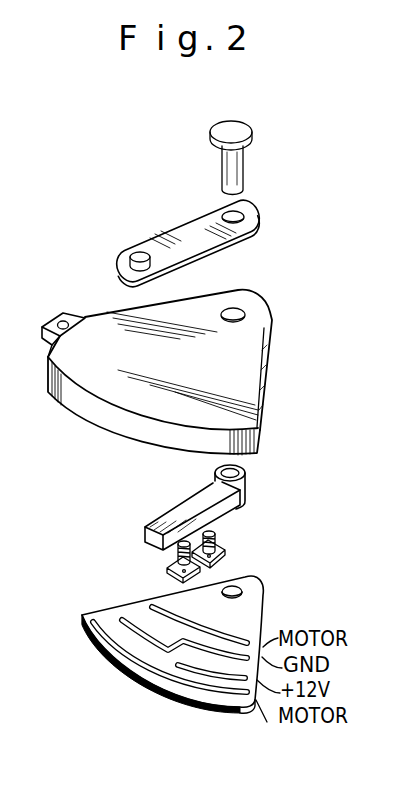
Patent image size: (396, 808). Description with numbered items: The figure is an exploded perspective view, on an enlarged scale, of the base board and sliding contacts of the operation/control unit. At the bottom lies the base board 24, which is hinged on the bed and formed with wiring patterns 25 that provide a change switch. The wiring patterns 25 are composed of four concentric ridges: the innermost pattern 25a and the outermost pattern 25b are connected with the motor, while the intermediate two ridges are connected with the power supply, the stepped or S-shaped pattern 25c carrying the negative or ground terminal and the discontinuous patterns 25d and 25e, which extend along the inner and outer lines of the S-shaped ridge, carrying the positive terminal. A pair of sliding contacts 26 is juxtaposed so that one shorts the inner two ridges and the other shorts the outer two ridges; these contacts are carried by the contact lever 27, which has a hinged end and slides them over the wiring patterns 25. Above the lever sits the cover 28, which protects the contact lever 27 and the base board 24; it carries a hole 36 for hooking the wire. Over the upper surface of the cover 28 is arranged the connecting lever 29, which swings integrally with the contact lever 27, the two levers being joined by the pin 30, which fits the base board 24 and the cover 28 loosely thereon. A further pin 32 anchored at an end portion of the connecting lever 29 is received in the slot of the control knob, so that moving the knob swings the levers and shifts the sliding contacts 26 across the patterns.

The base board 24 is at (146, 697).
The wiring patterns 25 is at (176, 651).
The innermost pattern 25a is at (233, 637).
The outermost pattern 25b is at (121, 661).
The stepped pattern 25c is at (203, 658).
The discontinuous pattern 25d is at (142, 613).
The discontinuous pattern 25e is at (218, 678).
The sliding contacts 26 is at (222, 563).
The contact lever 27 is at (173, 505).
The cover 28 is at (247, 366).
The connecting lever 29 is at (163, 223).
The pin 30 is at (243, 167).
The pin 32 is at (135, 250).
The hole 36 is at (62, 312).